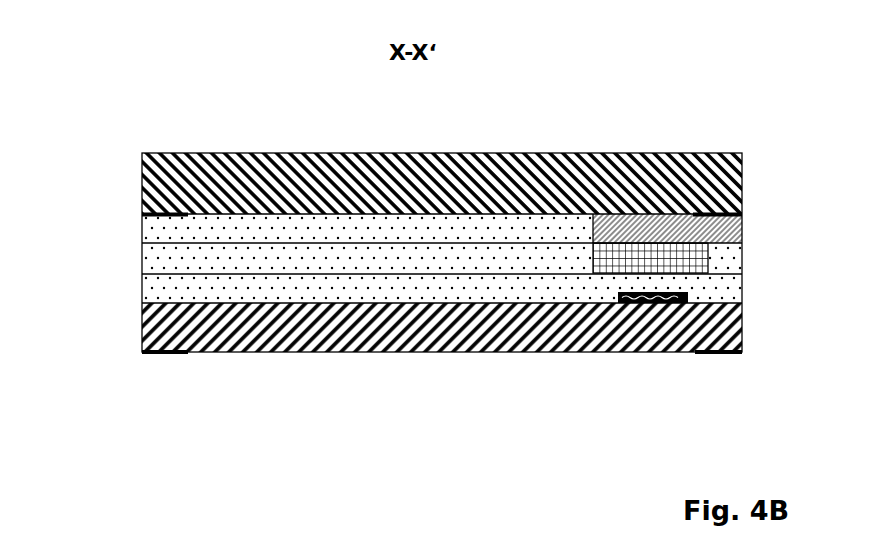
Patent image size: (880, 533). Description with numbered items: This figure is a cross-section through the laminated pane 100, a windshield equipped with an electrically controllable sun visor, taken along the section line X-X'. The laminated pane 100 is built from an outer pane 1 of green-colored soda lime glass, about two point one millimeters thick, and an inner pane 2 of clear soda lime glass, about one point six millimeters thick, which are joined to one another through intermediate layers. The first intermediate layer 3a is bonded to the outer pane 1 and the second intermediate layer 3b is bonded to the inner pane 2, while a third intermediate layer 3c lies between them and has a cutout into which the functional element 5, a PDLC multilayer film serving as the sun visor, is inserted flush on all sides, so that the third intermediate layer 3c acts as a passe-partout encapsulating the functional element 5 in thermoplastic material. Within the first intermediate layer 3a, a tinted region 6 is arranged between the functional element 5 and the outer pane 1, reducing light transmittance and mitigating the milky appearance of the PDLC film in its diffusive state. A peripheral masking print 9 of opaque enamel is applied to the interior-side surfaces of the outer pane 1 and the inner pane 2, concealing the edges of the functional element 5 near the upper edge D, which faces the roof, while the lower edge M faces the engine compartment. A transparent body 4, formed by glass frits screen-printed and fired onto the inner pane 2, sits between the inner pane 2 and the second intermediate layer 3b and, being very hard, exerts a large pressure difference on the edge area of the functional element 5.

The laminated pane 100 is at (188, 87).
The outer pane 1 is at (155, 158).
The inner pane 2 is at (221, 342).
The first intermediate layer 3a is at (148, 230).
The second intermediate layer 3b is at (728, 290).
The third intermediate layer 3c is at (158, 265).
The transparent body 4 is at (620, 305).
The functional element 5 is at (703, 270).
The tinted region 6 is at (715, 232).
The masking print 9 is at (742, 213).
The lower edge M is at (142, 168).
The upper edge D is at (742, 172).